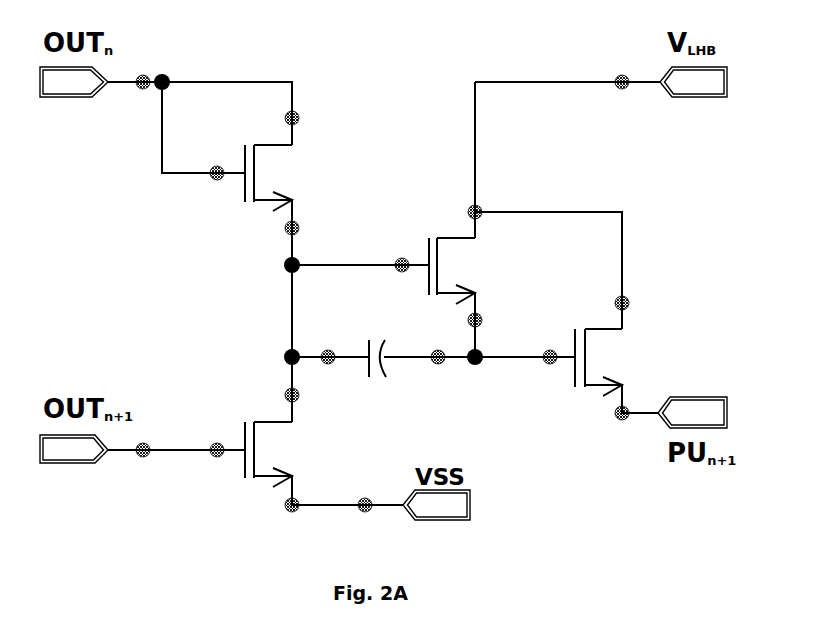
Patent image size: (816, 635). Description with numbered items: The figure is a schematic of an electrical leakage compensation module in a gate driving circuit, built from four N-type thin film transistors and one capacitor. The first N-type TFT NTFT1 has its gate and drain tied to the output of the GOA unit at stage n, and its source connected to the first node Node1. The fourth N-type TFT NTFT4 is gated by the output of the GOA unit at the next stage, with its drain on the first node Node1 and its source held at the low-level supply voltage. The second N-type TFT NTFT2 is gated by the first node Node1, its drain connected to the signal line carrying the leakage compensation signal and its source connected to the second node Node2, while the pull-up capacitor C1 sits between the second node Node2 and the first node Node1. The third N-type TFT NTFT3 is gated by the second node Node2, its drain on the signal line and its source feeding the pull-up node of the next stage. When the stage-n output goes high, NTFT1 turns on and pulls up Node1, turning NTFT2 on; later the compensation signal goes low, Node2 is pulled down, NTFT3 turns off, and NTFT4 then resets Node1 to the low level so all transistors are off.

The first N-type TFT NTFT1 is at (292, 178).
The second N-type TFT NTFT2 is at (478, 271).
The third N-type TFT NTFT3 is at (621, 362).
The fourth N-type TFT NTFT4 is at (293, 454).
The pull-up capacitor C1 is at (384, 374).
The first node Node1 is at (259, 267).
The second node Node2 is at (397, 370).